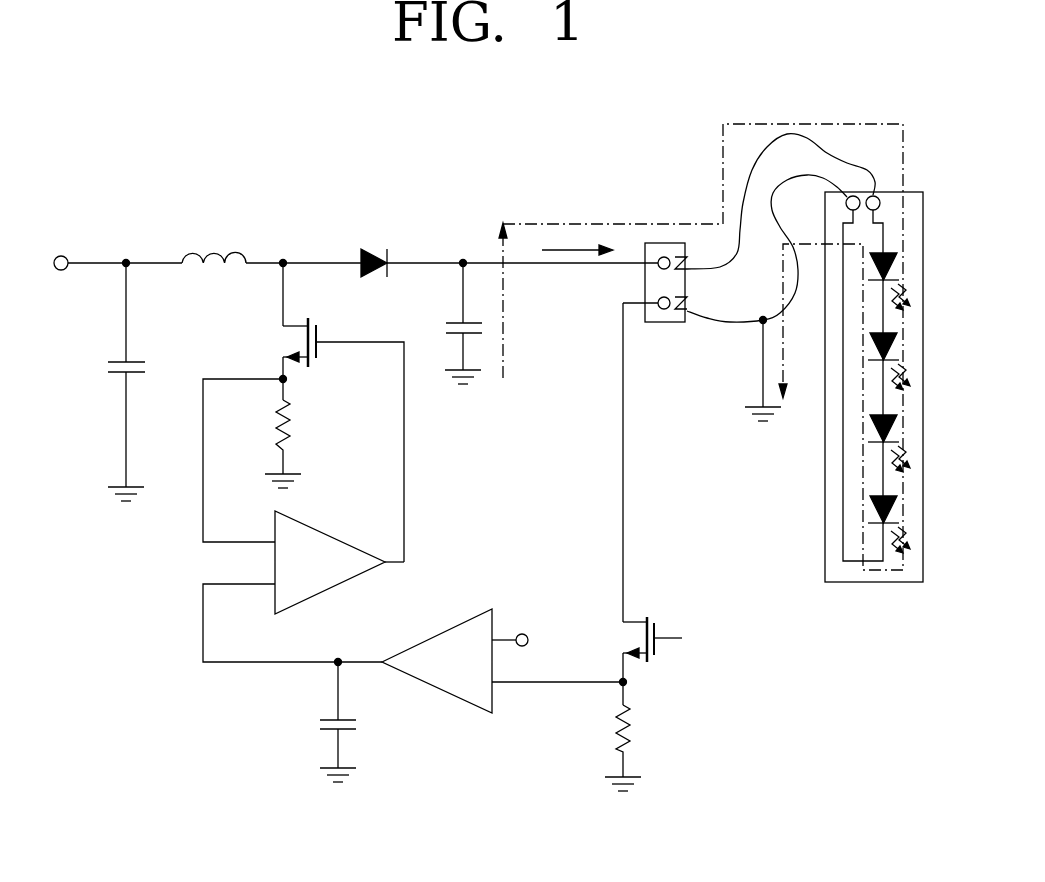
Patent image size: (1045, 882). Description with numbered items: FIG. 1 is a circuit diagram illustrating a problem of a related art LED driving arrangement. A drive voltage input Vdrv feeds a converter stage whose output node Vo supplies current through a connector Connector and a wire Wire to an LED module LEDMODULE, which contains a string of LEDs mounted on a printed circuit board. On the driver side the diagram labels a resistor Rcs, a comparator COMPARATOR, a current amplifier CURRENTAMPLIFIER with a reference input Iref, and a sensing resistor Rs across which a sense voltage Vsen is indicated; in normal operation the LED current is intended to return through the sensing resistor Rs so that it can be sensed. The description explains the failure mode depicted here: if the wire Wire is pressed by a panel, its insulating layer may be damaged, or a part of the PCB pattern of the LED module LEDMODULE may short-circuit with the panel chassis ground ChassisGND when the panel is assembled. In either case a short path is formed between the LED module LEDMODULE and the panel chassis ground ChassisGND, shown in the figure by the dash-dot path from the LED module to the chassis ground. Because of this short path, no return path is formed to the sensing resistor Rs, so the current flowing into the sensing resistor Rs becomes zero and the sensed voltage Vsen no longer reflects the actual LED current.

The drive voltage input Vdrv is at (110, 249).
The output voltage node Vo is at (463, 306).
The connector Connector is at (680, 298).
The wire Wire is at (781, 228).
The panel chassis ground ChassisGND is at (763, 399).
The LED module LEDMODULE is at (872, 404).
The current sense resistor Rcs is at (297, 444).
The comparator COMPARATOR is at (334, 595).
The current amplifier CURRENTAMPLIFIER is at (432, 690).
The reference current Iref is at (531, 640).
The sensing resistor Rs is at (613, 748).
The sense voltage Vsen is at (662, 729).